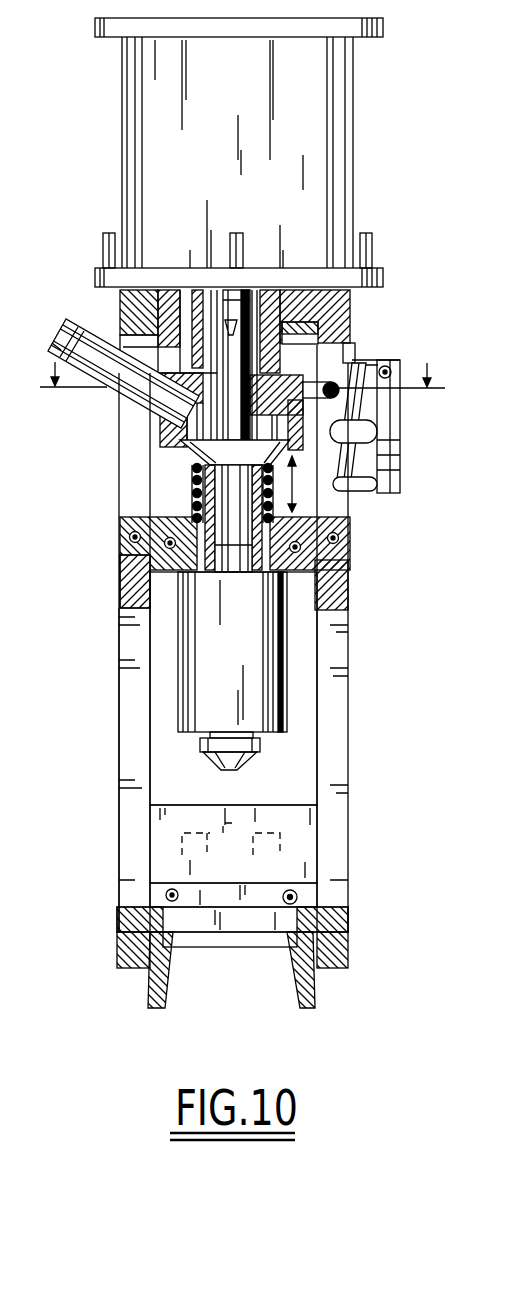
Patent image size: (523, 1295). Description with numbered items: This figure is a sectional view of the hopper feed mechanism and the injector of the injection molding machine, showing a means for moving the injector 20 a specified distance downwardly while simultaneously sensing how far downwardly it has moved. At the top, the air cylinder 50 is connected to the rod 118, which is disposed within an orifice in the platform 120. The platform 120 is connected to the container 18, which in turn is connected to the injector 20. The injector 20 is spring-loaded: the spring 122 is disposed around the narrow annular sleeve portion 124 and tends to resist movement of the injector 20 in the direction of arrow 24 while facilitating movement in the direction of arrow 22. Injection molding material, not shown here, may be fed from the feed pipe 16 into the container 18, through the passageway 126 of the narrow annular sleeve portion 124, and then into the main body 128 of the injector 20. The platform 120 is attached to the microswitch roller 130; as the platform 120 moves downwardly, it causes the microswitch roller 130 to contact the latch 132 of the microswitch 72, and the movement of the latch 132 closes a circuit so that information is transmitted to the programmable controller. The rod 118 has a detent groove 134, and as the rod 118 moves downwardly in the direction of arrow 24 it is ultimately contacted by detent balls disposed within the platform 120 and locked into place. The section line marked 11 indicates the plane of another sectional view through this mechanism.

The air cylinder 50 is at (343, 138).
The detent groove 134 is at (305, 336).
The rod 118 is at (328, 348).
The microswitch roller 130 is at (398, 363).
The latch 132 is at (388, 446).
The microswitch 72 is at (398, 481).
The section line 11- 11 is at (242, 393).
The feed pipe 16 is at (130, 405).
The platform 120 is at (172, 440).
The container 18 is at (193, 488).
The narrow annular sleeve portion 124 is at (197, 501).
The spring 122 is at (200, 514).
The arrow 22 is at (298, 510).
The arrow 24 is at (339, 540).
The passageway 126 is at (330, 565).
The injector 20 is at (185, 607).
The main body 128 is at (247, 655).